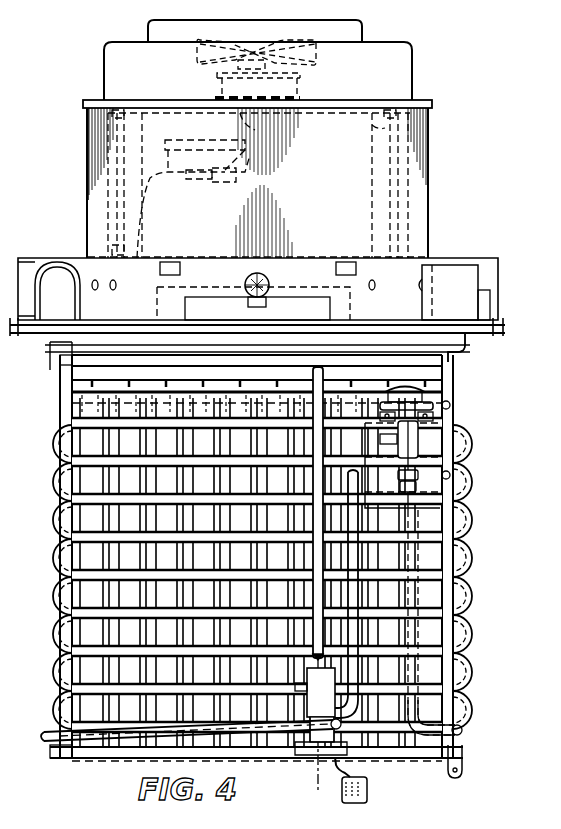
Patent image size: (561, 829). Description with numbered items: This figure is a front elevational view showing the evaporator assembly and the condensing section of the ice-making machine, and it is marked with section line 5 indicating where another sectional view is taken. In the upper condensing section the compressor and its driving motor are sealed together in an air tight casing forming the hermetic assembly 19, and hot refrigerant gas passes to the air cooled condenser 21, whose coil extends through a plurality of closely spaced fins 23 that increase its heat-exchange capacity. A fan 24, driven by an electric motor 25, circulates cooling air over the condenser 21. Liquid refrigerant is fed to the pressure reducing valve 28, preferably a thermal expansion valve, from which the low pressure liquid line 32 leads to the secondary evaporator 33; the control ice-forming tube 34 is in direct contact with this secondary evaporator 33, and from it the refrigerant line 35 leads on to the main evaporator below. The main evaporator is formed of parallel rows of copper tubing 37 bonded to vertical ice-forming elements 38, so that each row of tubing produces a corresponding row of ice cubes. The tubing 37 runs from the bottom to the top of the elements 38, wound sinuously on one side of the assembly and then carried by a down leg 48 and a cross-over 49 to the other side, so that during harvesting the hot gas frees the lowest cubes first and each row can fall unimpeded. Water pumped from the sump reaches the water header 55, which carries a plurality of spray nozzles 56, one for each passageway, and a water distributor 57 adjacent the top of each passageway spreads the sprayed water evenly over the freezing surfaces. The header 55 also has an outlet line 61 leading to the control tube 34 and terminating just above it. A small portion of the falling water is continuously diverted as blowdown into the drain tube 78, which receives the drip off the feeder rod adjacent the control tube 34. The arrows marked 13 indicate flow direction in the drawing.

The section line 5- 5 is at (521, 270).
The refrigerant flow direction 13 is at (345, 655).
The hermetic assembly 19 is at (297, 145).
The air cooled condenser 21 is at (86, 185).
The fins 23 is at (92, 137).
The fan 24 is at (302, 55).
The electric motor 25 is at (285, 90).
The pressure reducing valve 28 is at (412, 441).
The low pressure liquid line 32 is at (352, 600).
The secondary evaporator 33 is at (300, 700).
The control ice-forming tube 34 is at (323, 694).
The refrigerant line 35 is at (175, 722).
The copper tubing 37 is at (275, 500).
The vertical ice-forming elements 38 is at (240, 558).
The down leg 48 is at (254, 556).
The cross-over 49 is at (463, 730).
The water header 55 is at (412, 372).
The spray nozzles 56 is at (128, 385).
The water distributor 57 is at (90, 410).
The outlet line 61 is at (320, 552).
The drain tube 78 is at (370, 786).